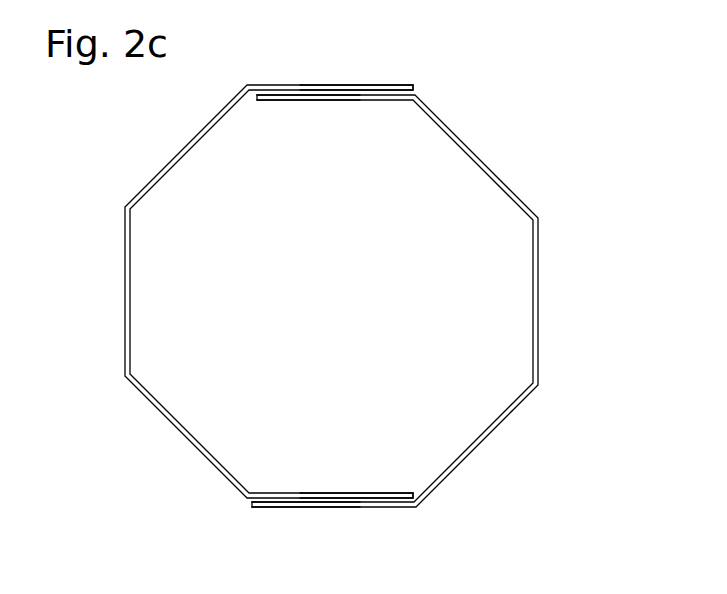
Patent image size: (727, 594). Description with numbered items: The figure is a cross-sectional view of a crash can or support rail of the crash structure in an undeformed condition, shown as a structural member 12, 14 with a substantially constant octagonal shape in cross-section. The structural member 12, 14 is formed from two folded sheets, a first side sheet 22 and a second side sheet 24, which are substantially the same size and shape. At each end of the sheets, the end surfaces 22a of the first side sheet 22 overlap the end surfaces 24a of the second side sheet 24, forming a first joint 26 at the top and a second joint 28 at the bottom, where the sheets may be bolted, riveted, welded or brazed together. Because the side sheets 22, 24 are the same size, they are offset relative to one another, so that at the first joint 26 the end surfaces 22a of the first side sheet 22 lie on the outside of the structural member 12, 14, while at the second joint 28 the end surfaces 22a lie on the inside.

The structural member 12 is at (355, 297).
The structural member 14 is at (515, 130).
The first side sheet 22 is at (128, 204).
The end surfaces of first side sheet 22a is at (297, 85).
The second side sheet 24 is at (525, 202).
The end surfaces of second side sheet 24a is at (335, 102).
The first joint 26 is at (408, 73).
The second joint 28 is at (402, 525).